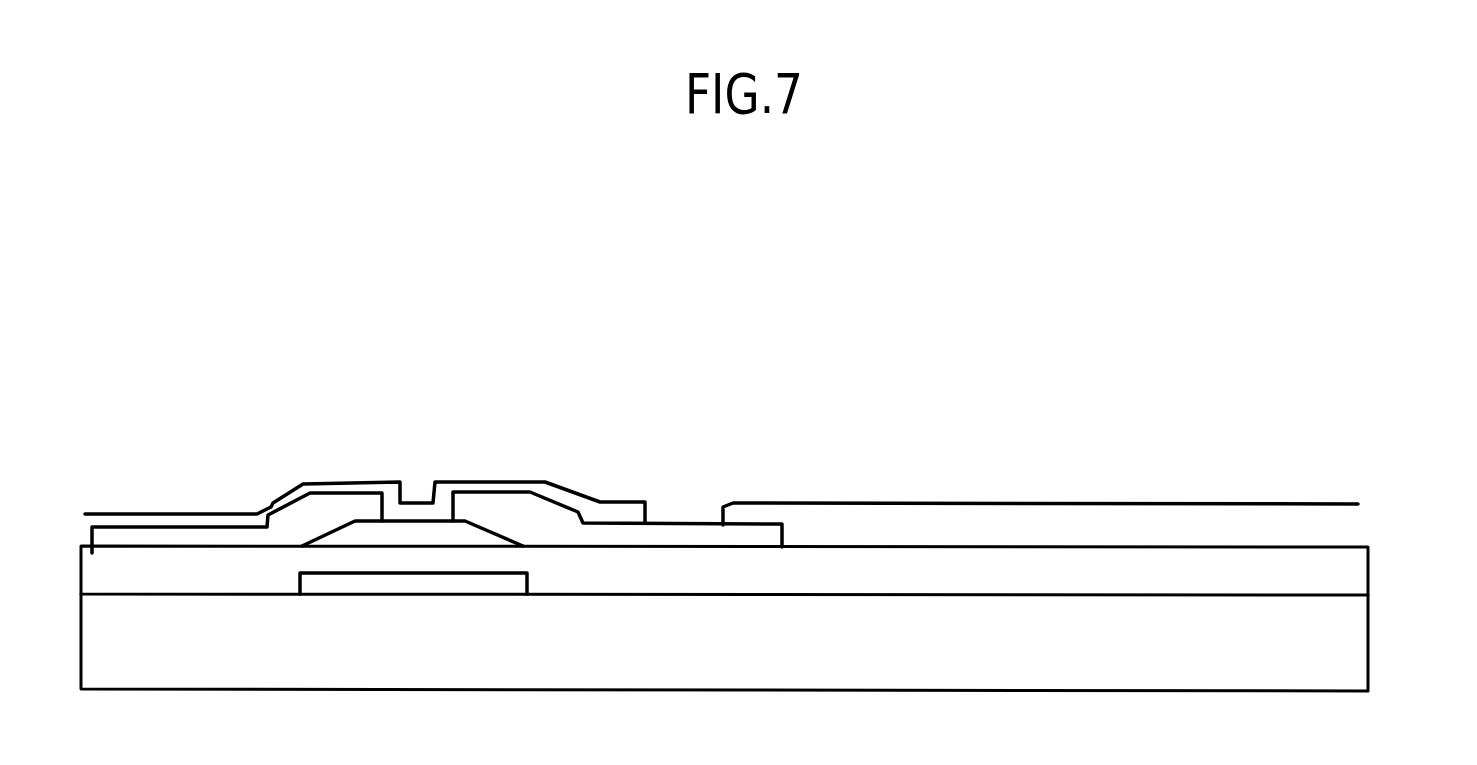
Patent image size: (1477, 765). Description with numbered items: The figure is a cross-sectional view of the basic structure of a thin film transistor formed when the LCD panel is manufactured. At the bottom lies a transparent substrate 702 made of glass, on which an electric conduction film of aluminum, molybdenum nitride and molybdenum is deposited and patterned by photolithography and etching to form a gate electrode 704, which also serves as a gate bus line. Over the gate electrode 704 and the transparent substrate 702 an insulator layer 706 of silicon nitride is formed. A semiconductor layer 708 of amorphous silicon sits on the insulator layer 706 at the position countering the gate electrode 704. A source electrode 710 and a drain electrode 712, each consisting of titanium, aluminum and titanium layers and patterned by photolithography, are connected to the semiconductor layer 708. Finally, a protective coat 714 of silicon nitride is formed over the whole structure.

The transparent substrate 702 is at (1369, 648).
The gate electrode 704 is at (368, 594).
The insulator layer 706 is at (1369, 577).
The semiconductor layer 708 is at (500, 532).
The source electrode 710 is at (558, 503).
The drain electrode 712 is at (283, 500).
The protective coat 714 is at (365, 463).